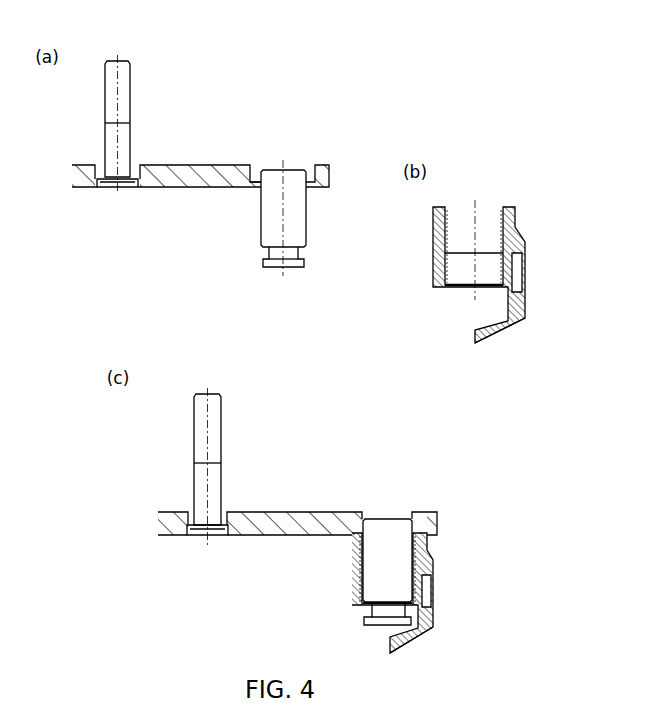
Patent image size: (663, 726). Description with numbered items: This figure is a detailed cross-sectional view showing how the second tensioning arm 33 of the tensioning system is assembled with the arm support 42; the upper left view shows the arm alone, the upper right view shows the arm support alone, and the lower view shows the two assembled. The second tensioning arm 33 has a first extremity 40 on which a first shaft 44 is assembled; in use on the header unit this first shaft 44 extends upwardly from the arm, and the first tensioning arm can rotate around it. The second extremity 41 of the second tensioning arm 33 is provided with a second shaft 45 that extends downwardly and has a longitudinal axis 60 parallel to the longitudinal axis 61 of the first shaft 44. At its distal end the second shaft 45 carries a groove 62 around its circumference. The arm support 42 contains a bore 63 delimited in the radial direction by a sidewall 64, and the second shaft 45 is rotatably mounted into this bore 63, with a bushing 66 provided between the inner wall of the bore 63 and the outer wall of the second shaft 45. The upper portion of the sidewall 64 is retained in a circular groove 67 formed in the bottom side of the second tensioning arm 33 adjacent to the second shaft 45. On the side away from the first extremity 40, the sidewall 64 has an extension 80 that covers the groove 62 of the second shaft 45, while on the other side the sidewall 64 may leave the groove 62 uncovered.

The second tensioning arm 33 is at (207, 192).
The first extremity 40 is at (85, 180).
The second extremity 41 is at (325, 172).
The arm support 42 is at (442, 411).
The first shaft 44 is at (127, 93).
The second shaft 45 is at (279, 180).
The longitudinal axis 60 is at (288, 213).
The longitudinal axis 61 is at (122, 147).
The groove 62 is at (269, 256).
The bore 63 is at (465, 215).
The sidewall 64 is at (435, 240).
The bushing 66 is at (444, 281).
The circular groove 67 is at (257, 185).
The extension 80 is at (495, 338).